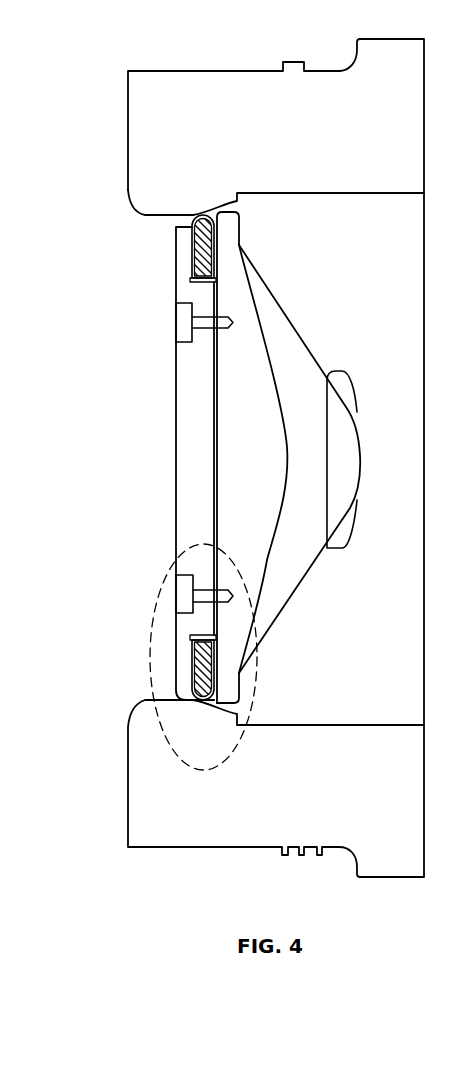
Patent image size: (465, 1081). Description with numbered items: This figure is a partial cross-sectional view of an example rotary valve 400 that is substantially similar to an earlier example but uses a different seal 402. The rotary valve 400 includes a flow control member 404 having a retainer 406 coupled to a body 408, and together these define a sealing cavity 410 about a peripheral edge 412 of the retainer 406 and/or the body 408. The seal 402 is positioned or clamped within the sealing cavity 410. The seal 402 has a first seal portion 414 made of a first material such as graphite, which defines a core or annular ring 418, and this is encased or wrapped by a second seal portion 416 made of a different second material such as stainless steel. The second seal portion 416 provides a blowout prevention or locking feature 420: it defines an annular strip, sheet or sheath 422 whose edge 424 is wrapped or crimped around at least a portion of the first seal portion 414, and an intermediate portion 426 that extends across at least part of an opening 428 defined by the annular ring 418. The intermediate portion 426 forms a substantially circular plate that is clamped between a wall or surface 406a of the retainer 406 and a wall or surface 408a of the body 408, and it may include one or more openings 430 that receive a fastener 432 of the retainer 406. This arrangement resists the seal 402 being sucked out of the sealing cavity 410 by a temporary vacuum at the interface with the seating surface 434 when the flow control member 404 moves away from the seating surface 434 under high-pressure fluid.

The rotary valve 400 is at (181, 52).
The seal 402 is at (238, 688).
The flow control member 404 is at (150, 476).
The retainer 406 is at (131, 463).
The wall or surface of the retainer 406a is at (213, 293).
The body 408 is at (320, 459).
The wall or surface of the body 408a is at (218, 458).
The sealing cavity 410 is at (190, 636).
The peripheral edge 412 is at (236, 722).
The first seal portion 414 is at (263, 671).
The second seal portion 416 is at (130, 762).
The annular ring 418 is at (217, 650).
The blowout prevention or locking feature 420 is at (218, 407).
The annular strip, sheet or sheath 422 is at (198, 690).
The edge 424 is at (210, 638).
The intermediate portion 426 is at (316, 464).
The opening 428 is at (205, 272).
The openings 430 is at (221, 318).
The fastener 432 is at (217, 443).
The seating surface 434 is at (203, 698).